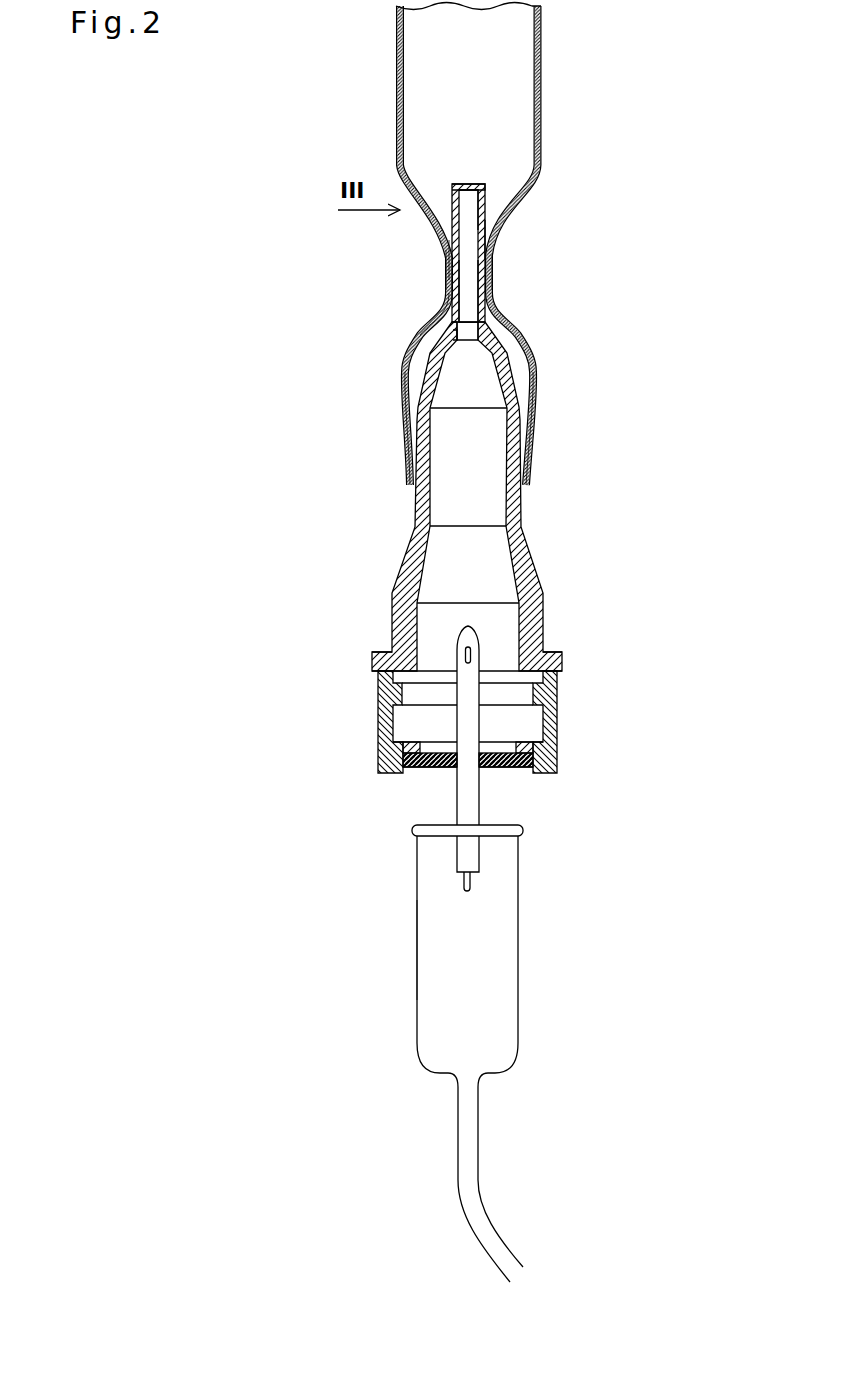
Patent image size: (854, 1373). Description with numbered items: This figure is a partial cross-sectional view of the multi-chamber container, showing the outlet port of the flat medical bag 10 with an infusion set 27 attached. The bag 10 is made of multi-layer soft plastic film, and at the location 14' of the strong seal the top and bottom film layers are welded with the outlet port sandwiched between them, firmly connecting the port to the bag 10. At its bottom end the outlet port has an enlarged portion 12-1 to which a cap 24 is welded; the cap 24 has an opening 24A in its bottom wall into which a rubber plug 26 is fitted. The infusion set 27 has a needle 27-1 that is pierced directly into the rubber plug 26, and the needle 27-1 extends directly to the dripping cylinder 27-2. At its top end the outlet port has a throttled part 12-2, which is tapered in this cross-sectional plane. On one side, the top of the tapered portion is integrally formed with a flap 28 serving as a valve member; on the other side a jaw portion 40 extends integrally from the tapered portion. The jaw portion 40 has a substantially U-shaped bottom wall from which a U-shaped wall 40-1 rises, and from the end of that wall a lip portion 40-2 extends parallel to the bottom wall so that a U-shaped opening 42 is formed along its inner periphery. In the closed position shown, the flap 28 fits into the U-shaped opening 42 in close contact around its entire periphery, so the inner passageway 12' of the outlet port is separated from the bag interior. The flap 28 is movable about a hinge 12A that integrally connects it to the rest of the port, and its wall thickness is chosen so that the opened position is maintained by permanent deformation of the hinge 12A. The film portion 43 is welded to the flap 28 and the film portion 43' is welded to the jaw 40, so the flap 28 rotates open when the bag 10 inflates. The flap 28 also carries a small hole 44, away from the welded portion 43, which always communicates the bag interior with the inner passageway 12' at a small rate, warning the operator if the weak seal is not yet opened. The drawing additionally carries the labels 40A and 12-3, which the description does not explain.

The medical bag 10 is at (382, 82).
The small hole 44 is at (451, 245).
The lip portion 40-2 is at (457, 186).
The U-shaped wall 40-1 is at (478, 185).
The jaw portion 40 is at (484, 202).
The U-shaped opening 42 is at (486, 244).
The welded portion of plastic film 43' is at (573, 257).
The lower portion of tubular member 40A is at (468, 273).
The welded portion of plastic film 43 is at (374, 267).
The flap 28 is at (450, 260).
The hinge 12A is at (455, 318).
The throttled part 12-2 is at (420, 375).
The location of strong seal 14' is at (579, 428).
The inner passageway 12' is at (503, 496).
The enlarged portion 12-1 is at (542, 615).
The cap 24 is at (557, 720).
The opening 24A is at (527, 773).
The rubber plug 26 is at (420, 772).
The needle 27-1 is at (478, 798).
The dripping cylinder 27-2 is at (417, 973).
The infusion set 27 is at (408, 1017).
The tube 12-3 is at (475, 1138).